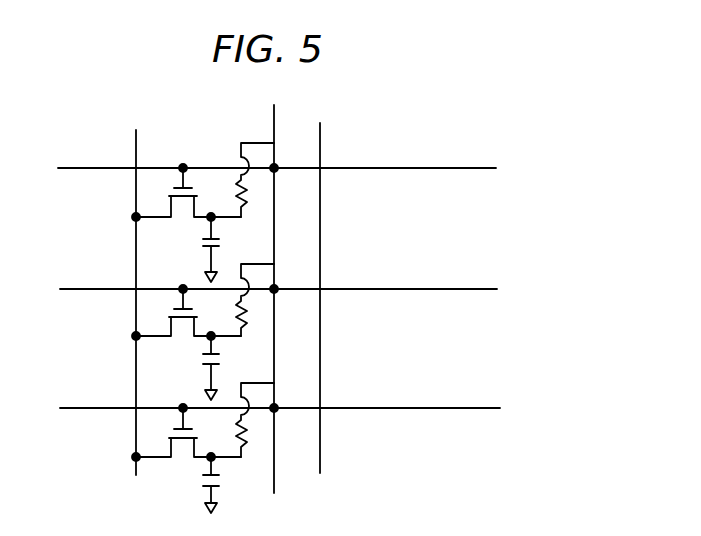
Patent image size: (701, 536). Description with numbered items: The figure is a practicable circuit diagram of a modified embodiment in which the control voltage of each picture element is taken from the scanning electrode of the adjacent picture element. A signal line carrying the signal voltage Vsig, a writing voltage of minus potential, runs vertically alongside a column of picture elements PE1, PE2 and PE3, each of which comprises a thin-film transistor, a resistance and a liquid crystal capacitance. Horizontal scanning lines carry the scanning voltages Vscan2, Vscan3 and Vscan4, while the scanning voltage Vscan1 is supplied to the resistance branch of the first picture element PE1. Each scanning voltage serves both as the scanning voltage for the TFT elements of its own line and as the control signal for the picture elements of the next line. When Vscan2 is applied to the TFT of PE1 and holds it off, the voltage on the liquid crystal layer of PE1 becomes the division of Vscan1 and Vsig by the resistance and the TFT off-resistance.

The signal voltage Vsig is at (133, 286).
The scanning voltage Vscan1 is at (292, 285).
The scanning voltage Vscan2 is at (315, 168).
The scanning voltage Vscan3 is at (316, 289).
The scanning voltage Vscan4 is at (316, 409).
The picture element PE1 is at (205, 212).
The picture element PE2 is at (205, 332).
The picture element PE3 is at (205, 448).